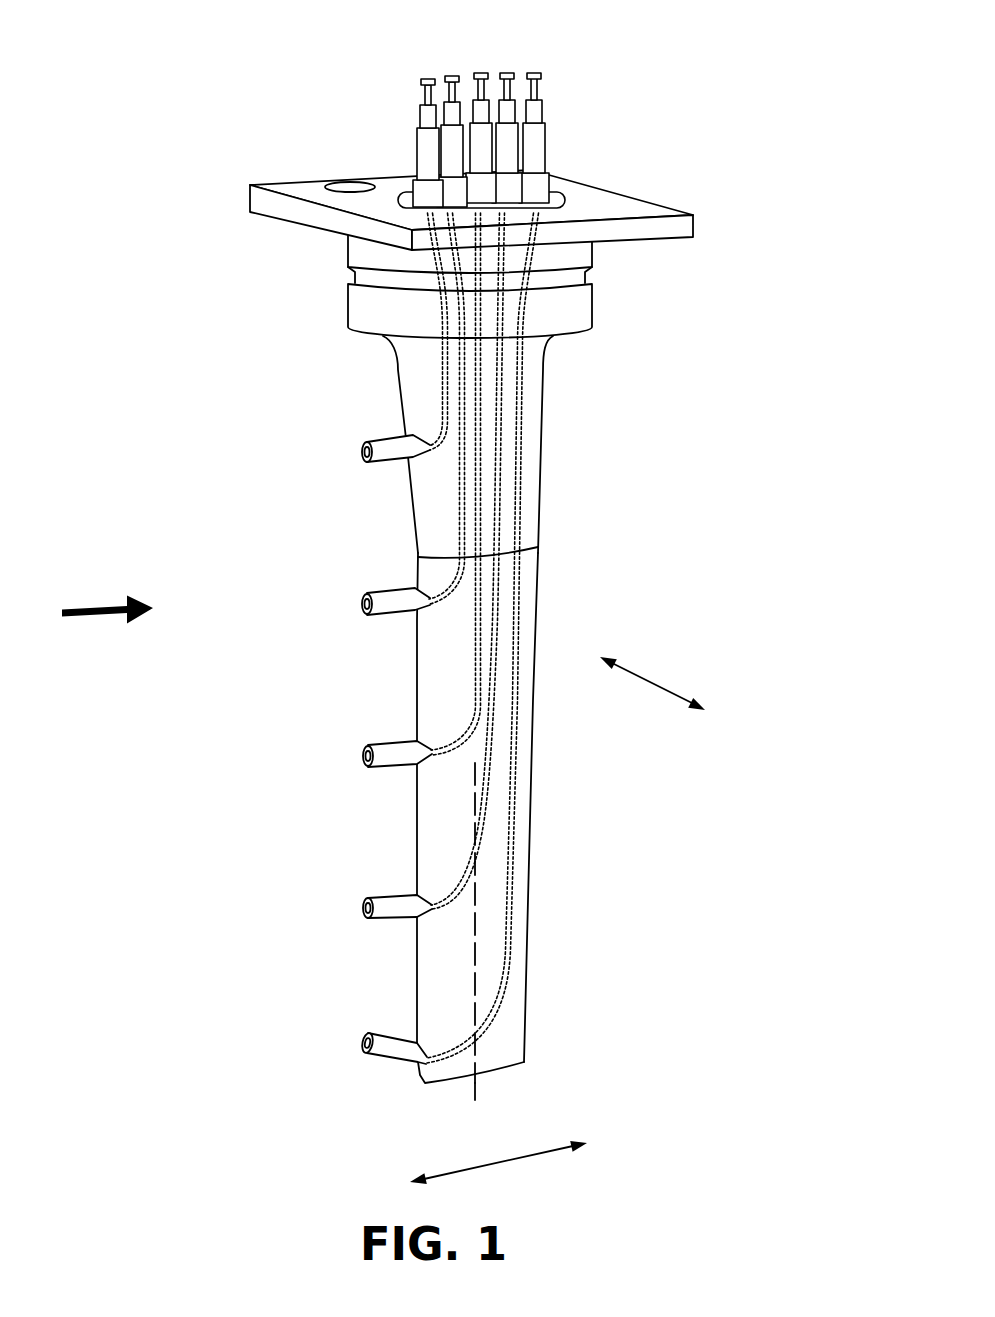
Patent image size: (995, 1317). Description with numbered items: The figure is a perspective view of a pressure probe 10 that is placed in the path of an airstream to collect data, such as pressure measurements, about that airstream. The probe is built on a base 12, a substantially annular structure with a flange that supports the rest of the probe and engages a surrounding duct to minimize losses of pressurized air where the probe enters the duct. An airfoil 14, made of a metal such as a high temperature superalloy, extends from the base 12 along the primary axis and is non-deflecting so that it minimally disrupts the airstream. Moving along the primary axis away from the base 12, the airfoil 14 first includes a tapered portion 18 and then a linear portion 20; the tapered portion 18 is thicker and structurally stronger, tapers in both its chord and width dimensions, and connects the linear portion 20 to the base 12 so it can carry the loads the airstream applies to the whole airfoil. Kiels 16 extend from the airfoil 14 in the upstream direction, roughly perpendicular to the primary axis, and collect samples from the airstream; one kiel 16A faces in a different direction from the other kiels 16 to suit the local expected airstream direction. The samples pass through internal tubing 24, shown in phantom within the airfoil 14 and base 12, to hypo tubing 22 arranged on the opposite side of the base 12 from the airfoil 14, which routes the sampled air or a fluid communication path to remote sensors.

The pressure probe 10 is at (138, 78).
The base 12 is at (272, 265).
The airfoil 14 is at (708, 580).
The kiels 16 is at (367, 605).
The kiel 16A is at (387, 1060).
The tapered portion 18 is at (533, 387).
The linear portion 20 is at (520, 943).
The hypo tubing 22 is at (566, 120).
The internal tubing 24 is at (517, 725).